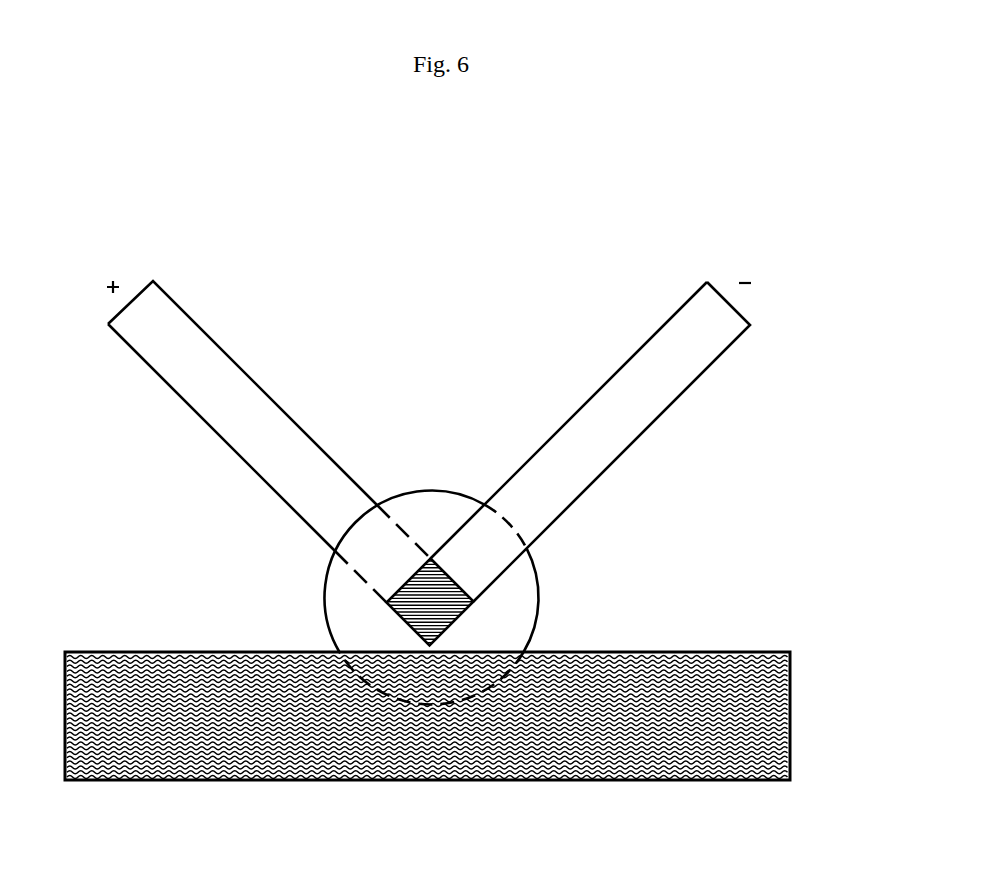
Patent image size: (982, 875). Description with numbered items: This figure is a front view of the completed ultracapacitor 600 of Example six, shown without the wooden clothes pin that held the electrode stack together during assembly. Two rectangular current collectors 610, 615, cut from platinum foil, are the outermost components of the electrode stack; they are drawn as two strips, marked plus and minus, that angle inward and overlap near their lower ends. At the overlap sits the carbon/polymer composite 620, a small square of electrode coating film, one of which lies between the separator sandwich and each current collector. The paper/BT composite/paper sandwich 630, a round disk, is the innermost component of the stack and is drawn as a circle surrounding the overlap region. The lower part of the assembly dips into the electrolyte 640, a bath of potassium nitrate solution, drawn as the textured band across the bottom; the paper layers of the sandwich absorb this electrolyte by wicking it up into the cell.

The completed ultracapacitor 600 is at (117, 156).
The current collector 610 is at (203, 457).
The current collector 615 is at (657, 458).
The carbon/polymer composite 620 is at (425, 617).
The paper/BT composite/paper sandwich 630 is at (555, 616).
The electrolyte 640 is at (242, 756).